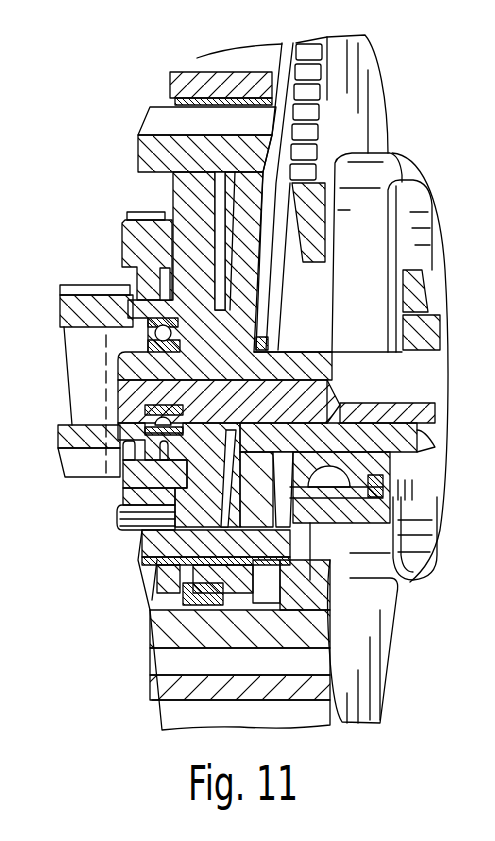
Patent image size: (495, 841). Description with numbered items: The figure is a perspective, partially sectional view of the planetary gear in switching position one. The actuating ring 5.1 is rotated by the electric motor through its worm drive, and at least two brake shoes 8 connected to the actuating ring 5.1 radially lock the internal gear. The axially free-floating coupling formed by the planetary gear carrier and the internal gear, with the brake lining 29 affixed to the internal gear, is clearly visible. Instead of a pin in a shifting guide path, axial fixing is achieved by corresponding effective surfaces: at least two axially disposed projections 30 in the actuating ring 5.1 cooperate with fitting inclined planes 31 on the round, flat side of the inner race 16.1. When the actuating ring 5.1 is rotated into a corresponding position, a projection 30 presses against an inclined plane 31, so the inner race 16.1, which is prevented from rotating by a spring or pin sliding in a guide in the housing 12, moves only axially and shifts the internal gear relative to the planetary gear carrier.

The actuating ring 5.1 is at (357, 83).
The projections 30 is at (282, 140).
The inner race 16.1 is at (263, 180).
The brake lining 29 is at (260, 262).
The inclined planes 31 is at (270, 297).
The brake shoes 8 is at (117, 252).
The housing 12 is at (147, 669).